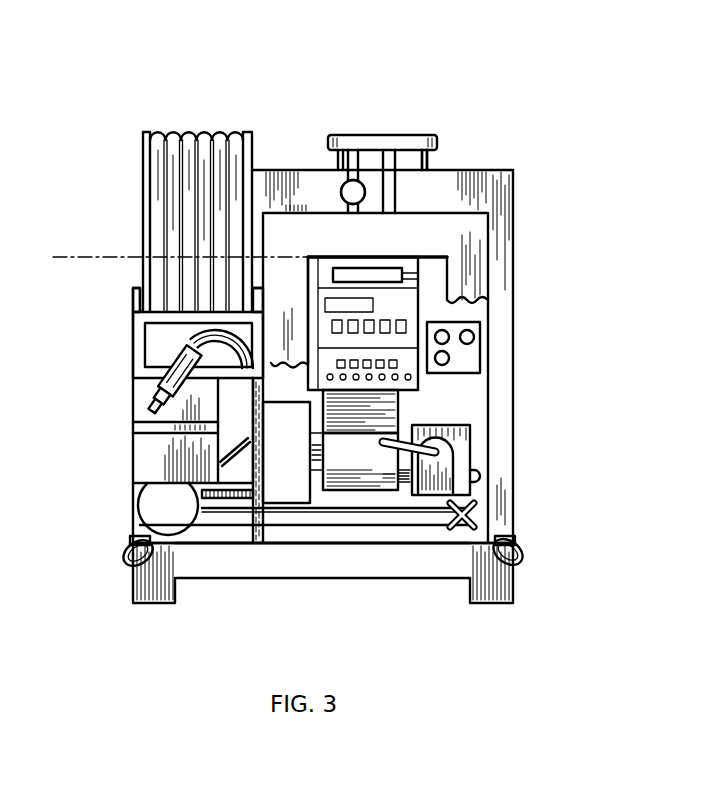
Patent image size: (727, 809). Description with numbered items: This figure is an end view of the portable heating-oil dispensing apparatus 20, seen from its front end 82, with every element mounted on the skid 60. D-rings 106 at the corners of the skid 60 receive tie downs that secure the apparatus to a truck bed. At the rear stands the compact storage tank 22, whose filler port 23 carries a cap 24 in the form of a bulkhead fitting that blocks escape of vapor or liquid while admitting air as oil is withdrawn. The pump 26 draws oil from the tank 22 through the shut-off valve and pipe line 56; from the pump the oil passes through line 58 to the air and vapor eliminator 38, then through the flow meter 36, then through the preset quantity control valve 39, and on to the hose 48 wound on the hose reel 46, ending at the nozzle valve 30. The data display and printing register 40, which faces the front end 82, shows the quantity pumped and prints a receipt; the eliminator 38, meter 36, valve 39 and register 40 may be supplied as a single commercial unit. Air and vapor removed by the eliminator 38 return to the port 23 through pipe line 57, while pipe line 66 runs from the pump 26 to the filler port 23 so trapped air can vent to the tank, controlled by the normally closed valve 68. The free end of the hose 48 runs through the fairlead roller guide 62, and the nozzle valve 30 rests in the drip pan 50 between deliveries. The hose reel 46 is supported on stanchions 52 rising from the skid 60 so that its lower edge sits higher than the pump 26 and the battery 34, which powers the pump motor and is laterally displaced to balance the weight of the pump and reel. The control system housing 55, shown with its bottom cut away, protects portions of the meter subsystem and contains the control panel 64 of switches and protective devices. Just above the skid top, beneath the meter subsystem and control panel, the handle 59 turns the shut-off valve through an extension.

The apparatus 20 is at (540, 83).
The storage tank 22 is at (513, 192).
The filler port 23 is at (410, 160).
The cap 24 is at (383, 137).
The pump 26 is at (150, 496).
The nozzle valve 30 is at (173, 374).
The battery 34 is at (470, 430).
The flow meter 36 is at (373, 463).
The air and vapor eliminator 38 is at (295, 465).
The preset quantity control valve 39 is at (425, 475).
The data display and printing register 40 is at (429, 272).
The hose reel 46 is at (137, 152).
The hose 48 is at (185, 142).
The drip pan 50 is at (145, 448).
The stanchion 52 is at (260, 387).
The control system housing 55 is at (470, 270).
The pipe line 56 is at (335, 513).
The pipe line 57 is at (397, 192).
The line 58 is at (208, 498).
The handle 59 is at (462, 528).
The skid 60 is at (505, 580).
The guide 62 is at (158, 362).
The control panel 64 is at (480, 357).
The pipe line 66 is at (348, 183).
The normally closed valve 68 is at (340, 192).
The front end 82 is at (253, 565).
The D-ring 106 is at (126, 558).